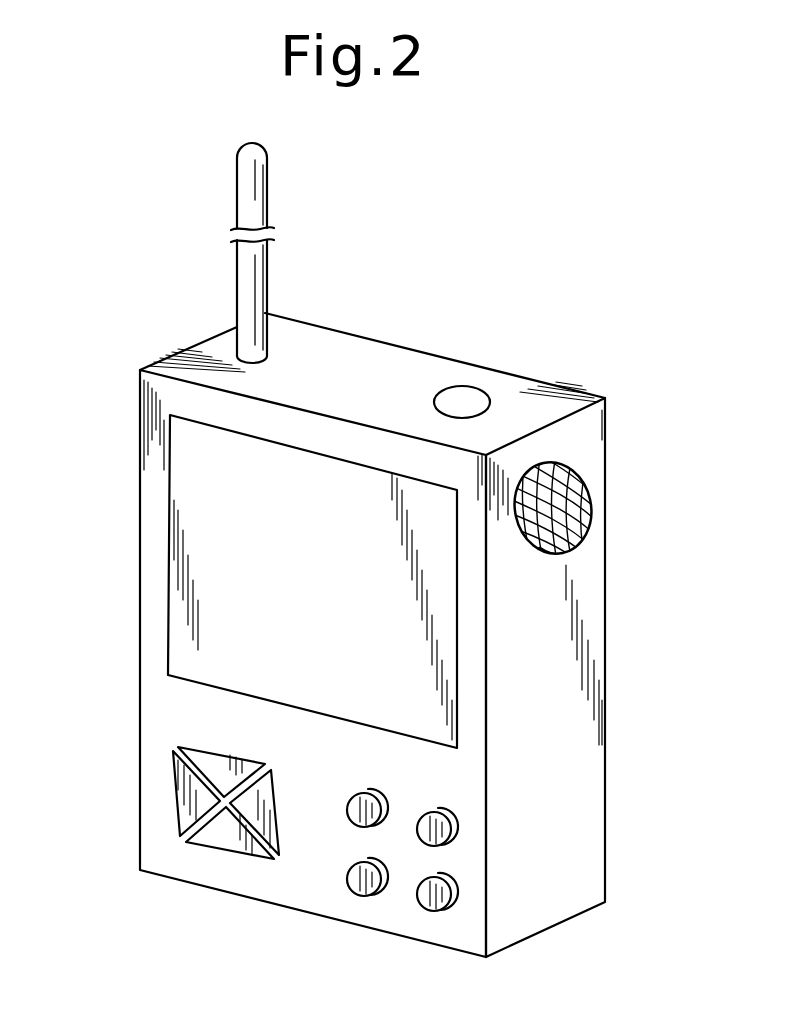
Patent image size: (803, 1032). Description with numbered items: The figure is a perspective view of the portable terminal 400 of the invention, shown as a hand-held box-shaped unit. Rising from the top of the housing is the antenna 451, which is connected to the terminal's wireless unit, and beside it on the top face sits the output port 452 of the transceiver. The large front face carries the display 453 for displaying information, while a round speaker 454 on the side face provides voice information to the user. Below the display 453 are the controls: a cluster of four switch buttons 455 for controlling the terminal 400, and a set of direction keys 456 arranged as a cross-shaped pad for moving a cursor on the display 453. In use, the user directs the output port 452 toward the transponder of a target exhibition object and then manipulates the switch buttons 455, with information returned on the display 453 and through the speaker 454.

The terminal 400 is at (462, 306).
The antenna 451 is at (268, 191).
The output port 452 is at (472, 386).
The display 453 is at (175, 548).
The speaker 454 is at (589, 527).
The switch buttons 455 is at (347, 813).
The direction keys 456 is at (200, 847).